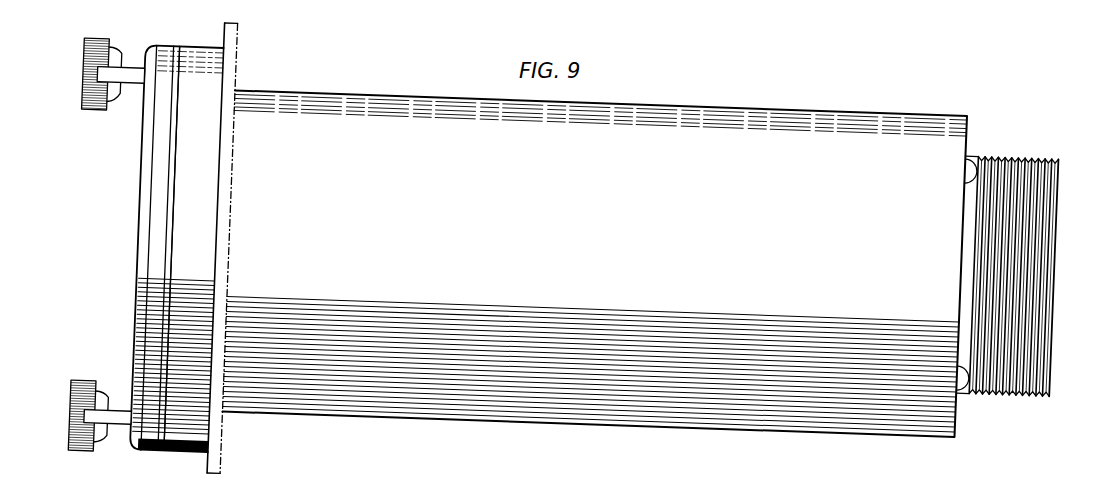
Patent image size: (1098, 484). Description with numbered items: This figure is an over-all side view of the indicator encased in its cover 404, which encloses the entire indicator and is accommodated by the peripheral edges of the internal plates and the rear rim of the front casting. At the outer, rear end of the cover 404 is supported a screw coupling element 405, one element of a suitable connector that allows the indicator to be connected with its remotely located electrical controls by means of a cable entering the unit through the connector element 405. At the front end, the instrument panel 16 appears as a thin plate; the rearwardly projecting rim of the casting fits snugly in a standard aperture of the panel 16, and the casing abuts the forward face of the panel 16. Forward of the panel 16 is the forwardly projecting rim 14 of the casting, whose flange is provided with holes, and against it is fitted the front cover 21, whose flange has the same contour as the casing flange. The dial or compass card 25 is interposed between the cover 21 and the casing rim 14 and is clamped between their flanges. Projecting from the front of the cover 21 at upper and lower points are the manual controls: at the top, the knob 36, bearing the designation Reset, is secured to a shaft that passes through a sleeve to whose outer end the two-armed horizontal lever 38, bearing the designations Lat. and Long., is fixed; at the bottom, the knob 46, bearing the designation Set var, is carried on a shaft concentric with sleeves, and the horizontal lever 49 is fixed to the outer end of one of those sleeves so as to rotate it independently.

The forwardly projecting rim 14 is at (185, 439).
The instrument panel 16 is at (218, 457).
The front cover 21 is at (150, 439).
The dial or compass card 25 is at (162, 439).
The manually rotatable knob 36 is at (95, 103).
The two-armed horizontal lever 38 is at (127, 73).
The manually operable knob 46 is at (82, 441).
The horizontal lever 49 is at (102, 412).
The cover 404 is at (735, 128).
The screw coupling element 405 is at (1027, 158).